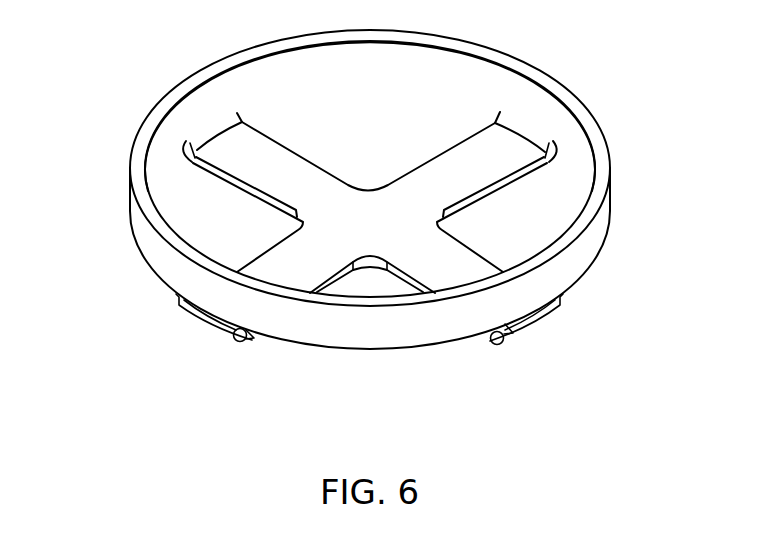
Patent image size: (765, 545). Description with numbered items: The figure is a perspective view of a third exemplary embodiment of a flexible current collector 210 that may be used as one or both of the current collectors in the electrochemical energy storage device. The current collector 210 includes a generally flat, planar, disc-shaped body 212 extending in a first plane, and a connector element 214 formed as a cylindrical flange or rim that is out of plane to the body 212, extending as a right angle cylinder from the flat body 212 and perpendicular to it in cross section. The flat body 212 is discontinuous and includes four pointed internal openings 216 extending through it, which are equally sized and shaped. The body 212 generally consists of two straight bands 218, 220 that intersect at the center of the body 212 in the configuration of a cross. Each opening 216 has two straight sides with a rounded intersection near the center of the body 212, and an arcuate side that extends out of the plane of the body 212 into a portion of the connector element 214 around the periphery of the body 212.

The flexible current collector 210 is at (552, 48).
The body 212 is at (497, 153).
The connector element 214 is at (400, 58).
The openings 216 is at (308, 108).
The straight band 218 is at (457, 167).
The straight band 220 is at (230, 150).